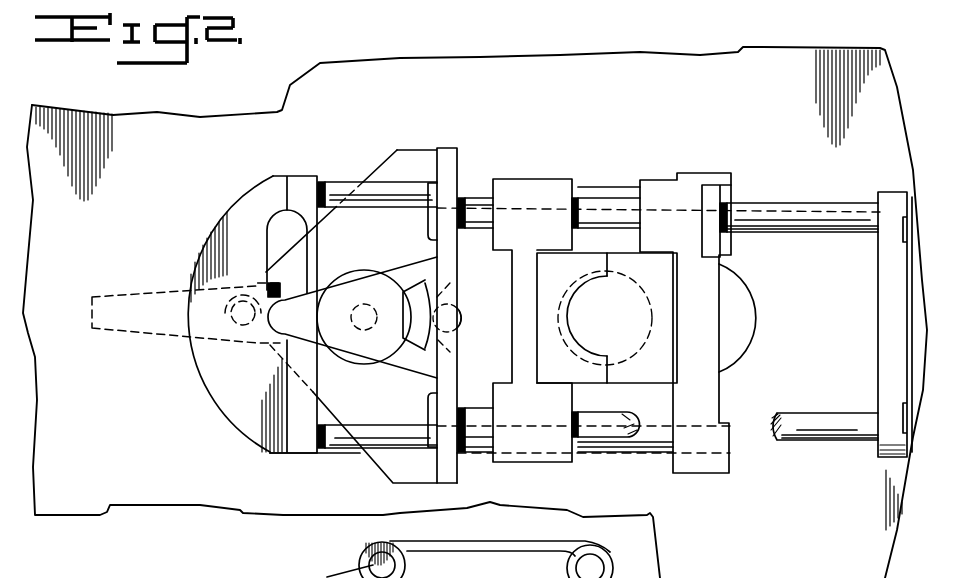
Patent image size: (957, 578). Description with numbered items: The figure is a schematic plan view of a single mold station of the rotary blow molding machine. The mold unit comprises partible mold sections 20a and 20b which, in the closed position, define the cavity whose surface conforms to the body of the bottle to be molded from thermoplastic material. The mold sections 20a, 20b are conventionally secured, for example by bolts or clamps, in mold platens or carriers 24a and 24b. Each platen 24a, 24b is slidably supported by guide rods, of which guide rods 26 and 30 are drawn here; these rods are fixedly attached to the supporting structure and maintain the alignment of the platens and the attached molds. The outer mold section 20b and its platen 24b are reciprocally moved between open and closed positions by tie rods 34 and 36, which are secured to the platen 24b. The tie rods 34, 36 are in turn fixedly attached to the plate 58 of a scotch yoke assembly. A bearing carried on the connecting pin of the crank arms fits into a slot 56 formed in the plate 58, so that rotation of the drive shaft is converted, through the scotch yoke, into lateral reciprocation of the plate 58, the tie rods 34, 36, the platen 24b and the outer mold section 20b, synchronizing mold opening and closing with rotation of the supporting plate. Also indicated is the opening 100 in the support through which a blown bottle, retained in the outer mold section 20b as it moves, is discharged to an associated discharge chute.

The partible mold section 20a is at (553, 270).
The outer mold section 20b is at (643, 273).
The mold platen 24a is at (525, 187).
The mold platen 24b is at (687, 197).
The guide rod 26 is at (838, 417).
The guide rod 30 is at (802, 210).
The tie rod 34 is at (658, 450).
The tie rod 36 is at (588, 190).
The slot 56 is at (275, 230).
The plate 58 is at (237, 422).
The opening 100 is at (737, 278).